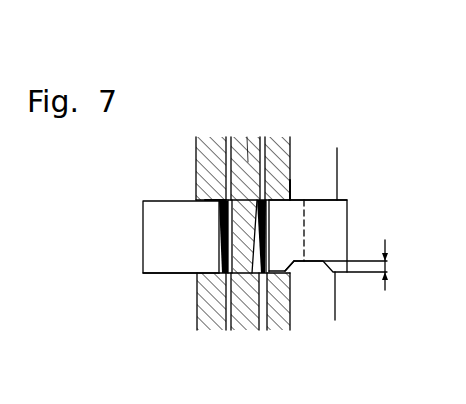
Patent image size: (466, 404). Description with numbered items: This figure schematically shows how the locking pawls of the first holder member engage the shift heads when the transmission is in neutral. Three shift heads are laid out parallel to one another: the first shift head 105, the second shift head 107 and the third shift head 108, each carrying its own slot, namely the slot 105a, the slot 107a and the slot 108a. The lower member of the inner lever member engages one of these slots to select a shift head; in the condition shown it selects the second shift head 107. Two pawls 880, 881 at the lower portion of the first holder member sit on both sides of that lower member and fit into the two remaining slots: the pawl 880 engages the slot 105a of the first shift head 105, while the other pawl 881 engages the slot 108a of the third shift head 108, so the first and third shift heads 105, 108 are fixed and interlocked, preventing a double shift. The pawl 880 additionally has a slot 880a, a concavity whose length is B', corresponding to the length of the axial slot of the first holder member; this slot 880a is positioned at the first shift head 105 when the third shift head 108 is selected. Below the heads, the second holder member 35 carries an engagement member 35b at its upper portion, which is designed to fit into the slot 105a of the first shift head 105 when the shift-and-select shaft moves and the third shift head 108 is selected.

The third shift head 108 is at (207, 331).
The second shift head 107 is at (245, 333).
The first shift head 105 is at (277, 333).
The slot 108a is at (222, 198).
The slot 107a is at (247, 137).
The slot 105a is at (291, 196).
The pawl 881 is at (160, 270).
The pawl 880 is at (338, 216).
The slot 880a is at (300, 263).
The second holder member 35 is at (336, 303).
The engagement member 35b is at (304, 240).
The length of the concavity B' is at (400, 265).